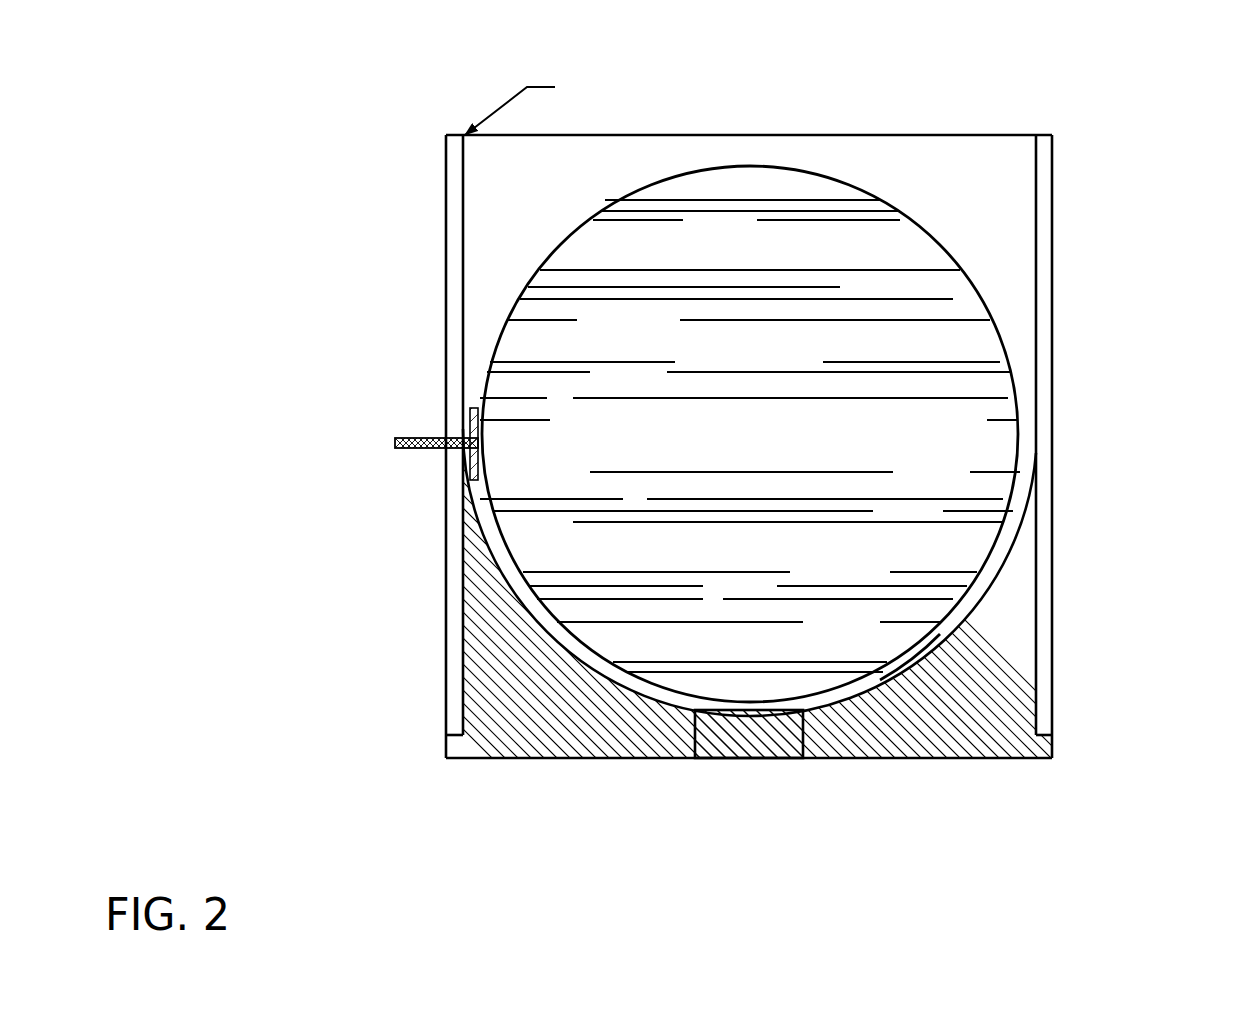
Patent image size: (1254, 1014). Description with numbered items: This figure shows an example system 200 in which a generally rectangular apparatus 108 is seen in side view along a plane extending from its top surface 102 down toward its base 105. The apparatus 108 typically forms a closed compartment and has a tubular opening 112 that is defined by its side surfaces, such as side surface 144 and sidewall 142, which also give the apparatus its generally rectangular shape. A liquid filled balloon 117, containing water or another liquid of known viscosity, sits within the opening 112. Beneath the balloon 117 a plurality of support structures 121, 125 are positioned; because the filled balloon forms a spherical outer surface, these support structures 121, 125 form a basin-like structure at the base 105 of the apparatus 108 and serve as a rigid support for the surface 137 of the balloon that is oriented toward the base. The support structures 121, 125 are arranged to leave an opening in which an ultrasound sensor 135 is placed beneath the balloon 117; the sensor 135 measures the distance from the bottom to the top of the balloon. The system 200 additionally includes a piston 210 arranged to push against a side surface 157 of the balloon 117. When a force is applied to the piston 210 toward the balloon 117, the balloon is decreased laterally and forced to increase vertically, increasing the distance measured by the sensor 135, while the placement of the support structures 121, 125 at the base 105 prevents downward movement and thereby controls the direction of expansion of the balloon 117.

The system 200 is at (196, 875).
The top surface 102 is at (745, 133).
The tubular opening 112 is at (820, 100).
The apparatus 108 is at (1057, 175).
The side surface 144 is at (443, 268).
The sidewall 142 is at (1057, 328).
The side surface of balloon 157 is at (467, 412).
The piston 210 is at (408, 447).
The liquid filled balloon 117 is at (750, 434).
The surface of balloon 137 is at (915, 648).
The ultrasound sensor 135 is at (749, 736).
The support structure 121 is at (500, 725).
The support structure 125 is at (985, 740).
The base 105 is at (625, 762).